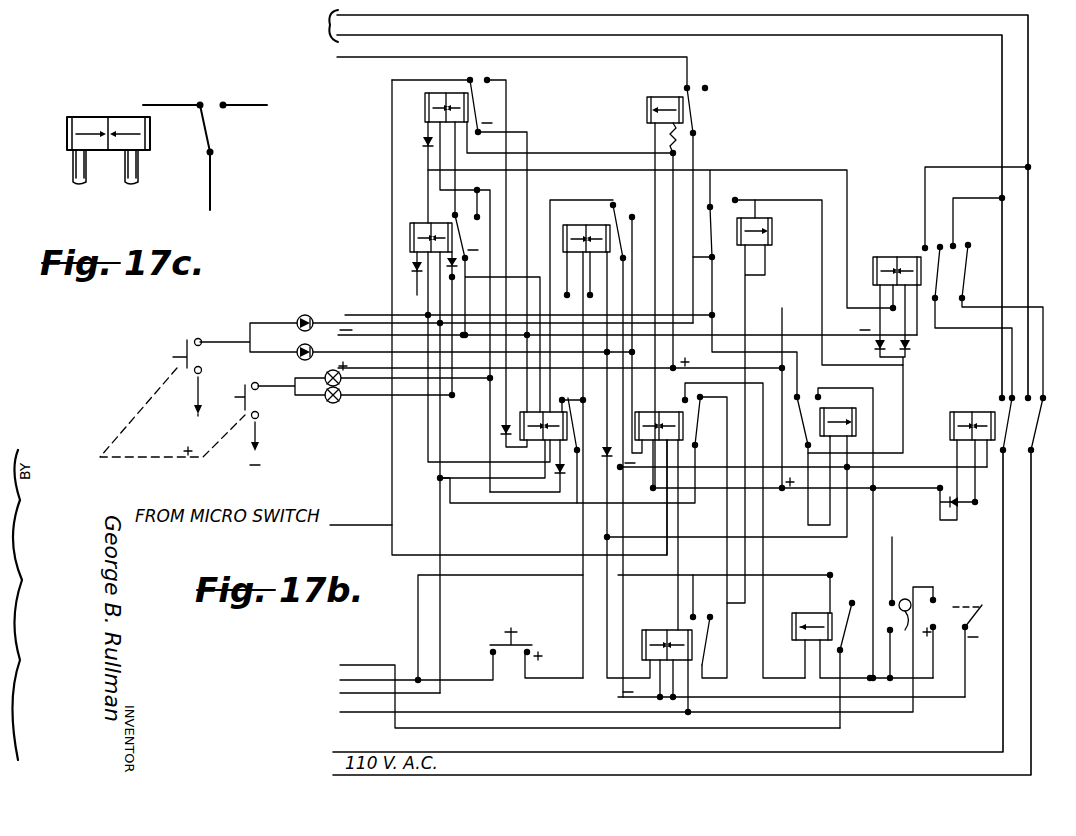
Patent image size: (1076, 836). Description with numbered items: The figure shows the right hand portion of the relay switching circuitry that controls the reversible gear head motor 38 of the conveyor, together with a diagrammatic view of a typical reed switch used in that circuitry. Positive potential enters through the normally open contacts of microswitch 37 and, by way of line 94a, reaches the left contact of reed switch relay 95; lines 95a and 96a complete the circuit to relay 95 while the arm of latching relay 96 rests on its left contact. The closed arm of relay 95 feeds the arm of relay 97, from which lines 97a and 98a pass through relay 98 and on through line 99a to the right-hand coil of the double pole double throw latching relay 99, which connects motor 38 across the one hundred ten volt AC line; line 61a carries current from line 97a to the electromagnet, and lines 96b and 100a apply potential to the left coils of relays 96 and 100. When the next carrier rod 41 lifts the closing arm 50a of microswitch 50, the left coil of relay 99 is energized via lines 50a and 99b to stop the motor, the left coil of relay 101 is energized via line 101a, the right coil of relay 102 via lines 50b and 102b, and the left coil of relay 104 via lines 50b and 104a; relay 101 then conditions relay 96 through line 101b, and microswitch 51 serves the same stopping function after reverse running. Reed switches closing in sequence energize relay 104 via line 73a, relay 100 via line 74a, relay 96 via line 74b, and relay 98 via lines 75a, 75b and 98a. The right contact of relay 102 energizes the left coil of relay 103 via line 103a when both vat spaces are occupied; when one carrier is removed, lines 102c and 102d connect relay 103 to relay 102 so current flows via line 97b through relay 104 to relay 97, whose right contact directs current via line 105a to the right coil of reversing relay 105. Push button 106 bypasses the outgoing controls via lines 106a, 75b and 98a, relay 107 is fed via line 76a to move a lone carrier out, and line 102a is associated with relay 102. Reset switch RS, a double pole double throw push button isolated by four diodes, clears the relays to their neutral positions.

The reversible gear head motor 38 is at (326, 27).
The line 94a is at (570, 57).
The reed switch relay 95 is at (665, 95).
The line 95a is at (655, 205).
The latching relay 101 is at (425, 106).
The line 101a is at (423, 156).
The line 101b is at (515, 107).
The latching relay 100 is at (410, 230).
The line 100a is at (410, 262).
The latching relay 102 is at (588, 225).
The line 102a is at (583, 364).
The line 102b is at (602, 455).
The line 102c is at (548, 225).
The line 102d is at (482, 503).
The line 61a is at (345, 315).
The reset switch RS is at (160, 380).
The reed switch relay 97 is at (772, 230).
The line 97a is at (710, 307).
The line 97b is at (752, 575).
The line 105a is at (745, 203).
The double pole double throw latching relay 99 is at (893, 257).
The line 99a is at (911, 347).
The line 99b is at (875, 347).
The reed switch relay 98 is at (857, 410).
The line 98a is at (757, 348).
The latching relay 96 is at (548, 412).
The line 96a is at (570, 388).
The line 96b is at (428, 462).
The latching relay 103 is at (672, 412).
The line 103a is at (685, 392).
The double pole double throw latching relay 105 is at (978, 412).
The line 74b is at (458, 488).
The line 50b is at (677, 537).
The line 75b is at (470, 575).
The push button 106 is at (512, 625).
The line 106a is at (447, 680).
The latching relay 104 is at (665, 630).
The line 104a is at (607, 668).
The relay 107 is at (810, 613).
The microswitch 50 is at (900, 597).
The closing arm of microswitch 50a is at (893, 550).
The carrier rod 41 is at (903, 643).
The microswitch 51 is at (985, 595).
The line 76a is at (348, 665).
The line 75a is at (340, 680).
The line 74a is at (340, 693).
The line 73a is at (340, 712).
The microswitch 37 is at (354, 510).